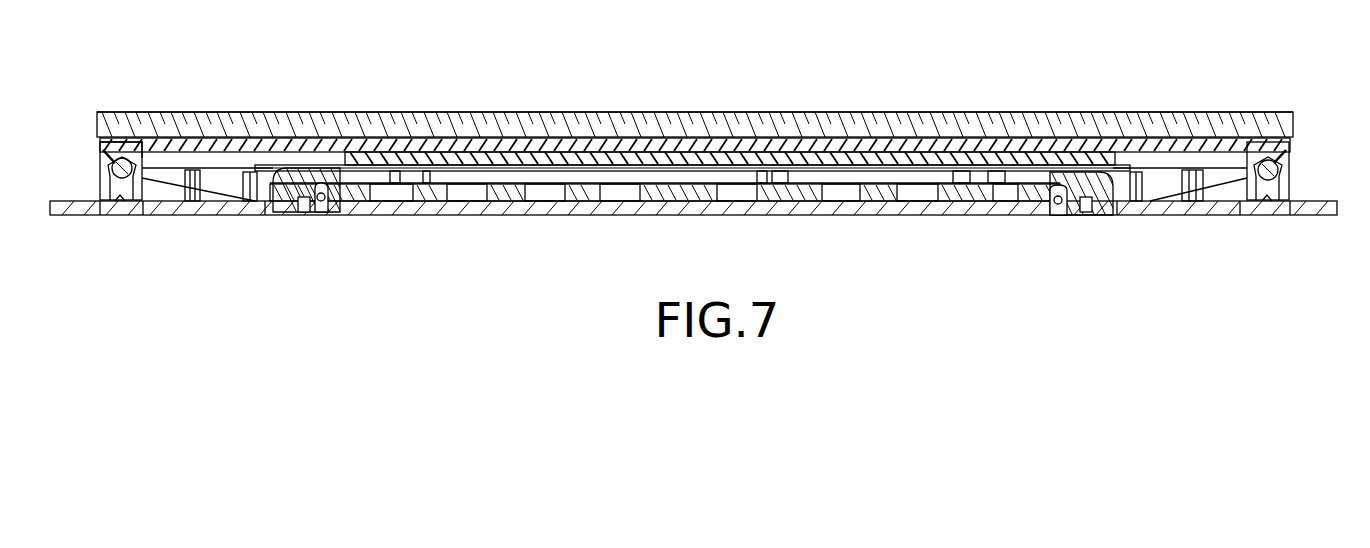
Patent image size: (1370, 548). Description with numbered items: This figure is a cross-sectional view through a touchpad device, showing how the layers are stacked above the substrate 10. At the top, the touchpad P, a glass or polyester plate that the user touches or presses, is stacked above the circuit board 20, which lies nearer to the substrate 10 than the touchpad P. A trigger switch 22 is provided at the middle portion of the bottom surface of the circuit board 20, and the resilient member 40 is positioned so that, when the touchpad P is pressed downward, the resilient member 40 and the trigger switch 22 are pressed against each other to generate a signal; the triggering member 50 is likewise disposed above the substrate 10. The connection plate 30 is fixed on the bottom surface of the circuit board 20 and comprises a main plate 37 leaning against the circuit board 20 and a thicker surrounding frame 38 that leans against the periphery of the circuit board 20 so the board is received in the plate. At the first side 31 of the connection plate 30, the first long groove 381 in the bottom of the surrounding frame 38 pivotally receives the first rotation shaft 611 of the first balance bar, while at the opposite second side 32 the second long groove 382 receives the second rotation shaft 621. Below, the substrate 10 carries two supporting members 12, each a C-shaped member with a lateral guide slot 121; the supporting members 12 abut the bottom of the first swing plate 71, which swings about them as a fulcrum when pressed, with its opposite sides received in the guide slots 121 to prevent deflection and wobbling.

The substrate 10 is at (72, 216).
The supporting member 12 is at (281, 213).
The lateral guide slot 121 is at (326, 205).
The circuit board 20 is at (770, 130).
The trigger switch 22 is at (690, 148).
The connection plate 30 is at (187, 63).
The first side 31 is at (100, 170).
The second side 32 is at (1289, 170).
The main plate 37 is at (142, 152).
The surrounding frame 38 is at (120, 158).
The first long groove 381 is at (100, 152).
The second long groove 382 is at (1287, 150).
The resilient member 40 is at (737, 160).
The triggering member 50 is at (468, 190).
The first swing plate 71 is at (440, 185).
The first rotation shaft 611 is at (122, 202).
The second rotation shaft 621 is at (1266, 202).
The touchpad P is at (647, 112).